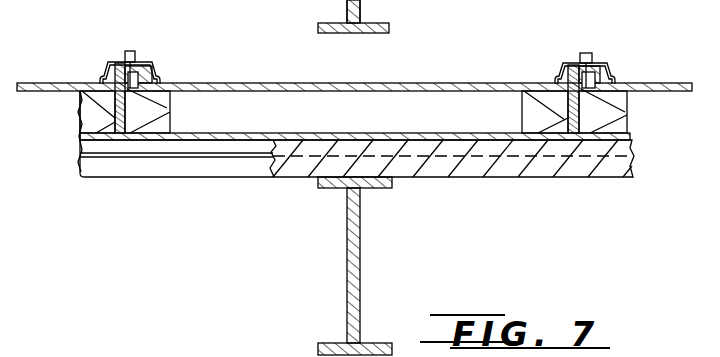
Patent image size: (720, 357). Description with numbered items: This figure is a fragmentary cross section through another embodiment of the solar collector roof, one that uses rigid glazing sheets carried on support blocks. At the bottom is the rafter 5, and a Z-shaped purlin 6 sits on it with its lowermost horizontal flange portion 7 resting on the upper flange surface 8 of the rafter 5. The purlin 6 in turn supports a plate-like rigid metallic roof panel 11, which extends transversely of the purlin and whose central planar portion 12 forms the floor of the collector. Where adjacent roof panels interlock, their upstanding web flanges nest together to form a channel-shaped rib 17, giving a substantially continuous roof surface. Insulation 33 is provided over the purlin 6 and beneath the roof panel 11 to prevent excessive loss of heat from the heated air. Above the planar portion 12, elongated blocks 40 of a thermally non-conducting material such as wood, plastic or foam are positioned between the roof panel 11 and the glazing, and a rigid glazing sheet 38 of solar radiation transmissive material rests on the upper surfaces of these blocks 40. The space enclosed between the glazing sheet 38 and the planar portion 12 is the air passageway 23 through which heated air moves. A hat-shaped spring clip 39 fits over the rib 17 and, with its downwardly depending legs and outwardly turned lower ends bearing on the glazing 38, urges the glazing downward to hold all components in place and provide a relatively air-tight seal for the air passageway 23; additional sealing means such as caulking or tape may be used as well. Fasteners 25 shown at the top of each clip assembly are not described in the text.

The rafter 5 is at (348, 305).
The Z-shaped purlin 6 is at (188, 178).
The lowermost horizontal flange portion 7 is at (143, 178).
The upper flange surface 8 is at (332, 187).
The roof panel 11 is at (202, 134).
The central planar portion 12 is at (247, 133).
The channel-shaped rib 17 is at (102, 110).
The air passageway 23 is at (348, 124).
The bolt 25 is at (133, 50).
The insulation 33 is at (618, 168).
The rigid glazing sheet 38 is at (206, 88).
The hat-shaped spring clip 39 is at (110, 78).
The elongated block 40 is at (166, 106).